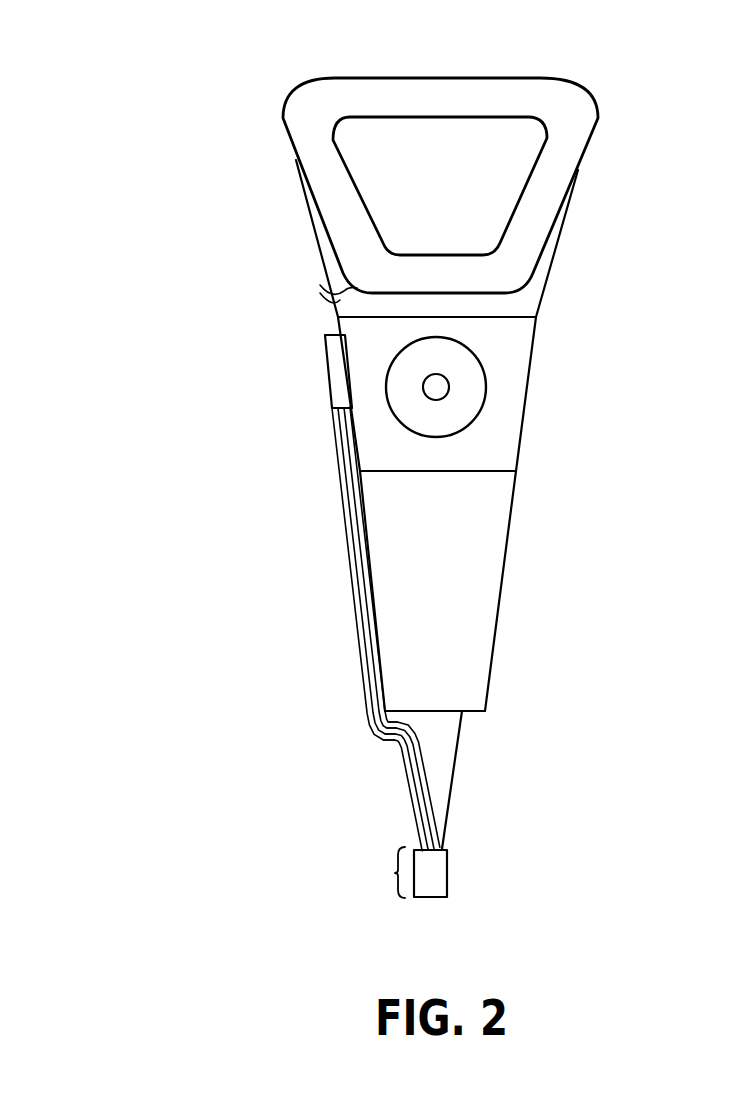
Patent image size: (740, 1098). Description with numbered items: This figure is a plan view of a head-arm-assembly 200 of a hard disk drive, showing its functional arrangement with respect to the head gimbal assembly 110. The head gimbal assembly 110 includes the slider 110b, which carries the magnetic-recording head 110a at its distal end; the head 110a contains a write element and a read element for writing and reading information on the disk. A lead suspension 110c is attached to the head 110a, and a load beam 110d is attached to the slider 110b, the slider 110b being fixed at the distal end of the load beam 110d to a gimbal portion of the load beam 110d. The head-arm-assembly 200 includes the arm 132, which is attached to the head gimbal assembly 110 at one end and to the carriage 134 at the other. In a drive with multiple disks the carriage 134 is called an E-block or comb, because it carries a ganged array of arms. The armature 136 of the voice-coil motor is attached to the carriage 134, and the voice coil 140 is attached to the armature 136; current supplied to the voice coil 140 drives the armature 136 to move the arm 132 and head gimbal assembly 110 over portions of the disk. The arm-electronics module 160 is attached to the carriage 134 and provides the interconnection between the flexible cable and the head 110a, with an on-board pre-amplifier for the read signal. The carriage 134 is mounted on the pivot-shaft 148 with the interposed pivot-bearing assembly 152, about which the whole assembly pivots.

The handheld controller 200 is at (100, 57).
The voice coil 140 is at (337, 207).
The armature 136 is at (338, 270).
The carriage 134 is at (490, 438).
The arm 132 is at (432, 551).
The pivot-shaft 148 is at (438, 386).
The pivot-bearing assembly 152 is at (467, 398).
The arm-electronics module 160 is at (338, 380).
The head gimbal assembly 110 is at (304, 652).
The magnetic-recording head 110a is at (418, 888).
The slider 110b is at (397, 873).
The lead suspension 110c is at (410, 782).
The load beam 110d is at (432, 748).